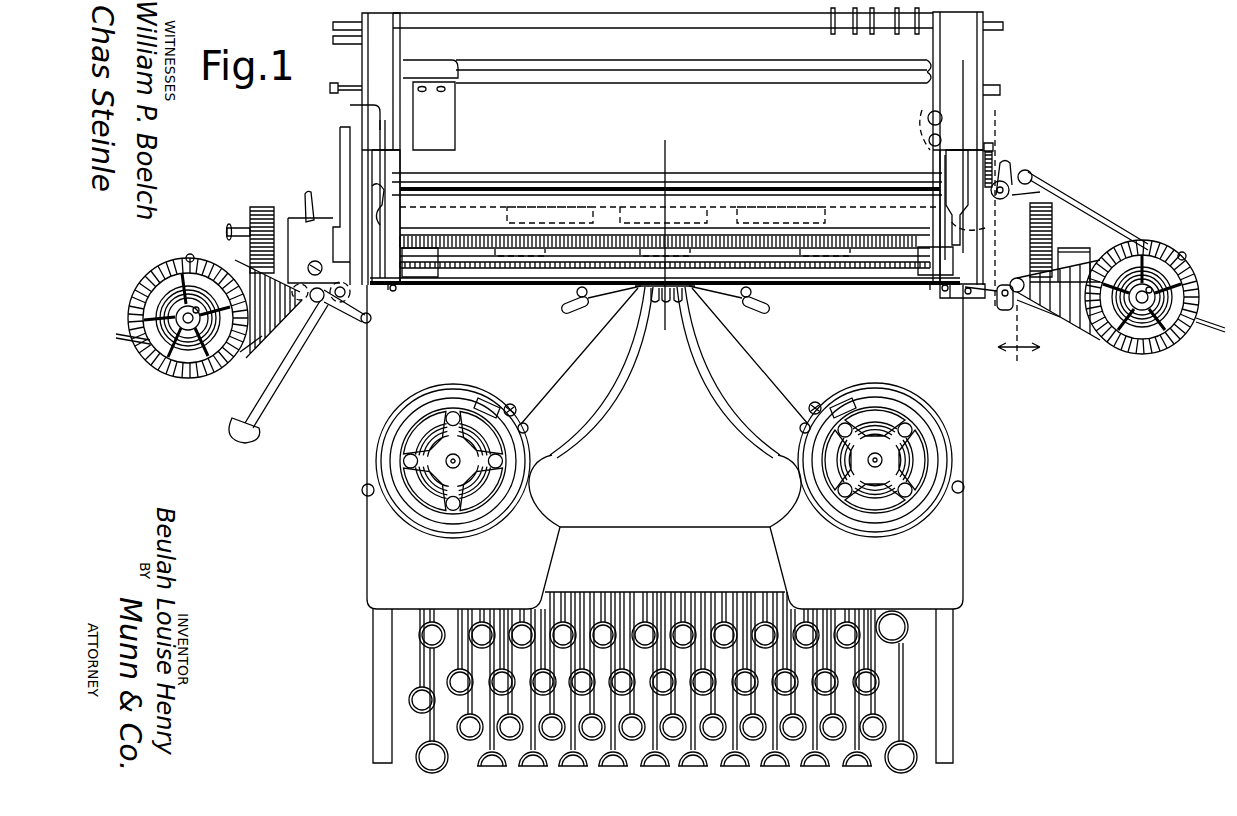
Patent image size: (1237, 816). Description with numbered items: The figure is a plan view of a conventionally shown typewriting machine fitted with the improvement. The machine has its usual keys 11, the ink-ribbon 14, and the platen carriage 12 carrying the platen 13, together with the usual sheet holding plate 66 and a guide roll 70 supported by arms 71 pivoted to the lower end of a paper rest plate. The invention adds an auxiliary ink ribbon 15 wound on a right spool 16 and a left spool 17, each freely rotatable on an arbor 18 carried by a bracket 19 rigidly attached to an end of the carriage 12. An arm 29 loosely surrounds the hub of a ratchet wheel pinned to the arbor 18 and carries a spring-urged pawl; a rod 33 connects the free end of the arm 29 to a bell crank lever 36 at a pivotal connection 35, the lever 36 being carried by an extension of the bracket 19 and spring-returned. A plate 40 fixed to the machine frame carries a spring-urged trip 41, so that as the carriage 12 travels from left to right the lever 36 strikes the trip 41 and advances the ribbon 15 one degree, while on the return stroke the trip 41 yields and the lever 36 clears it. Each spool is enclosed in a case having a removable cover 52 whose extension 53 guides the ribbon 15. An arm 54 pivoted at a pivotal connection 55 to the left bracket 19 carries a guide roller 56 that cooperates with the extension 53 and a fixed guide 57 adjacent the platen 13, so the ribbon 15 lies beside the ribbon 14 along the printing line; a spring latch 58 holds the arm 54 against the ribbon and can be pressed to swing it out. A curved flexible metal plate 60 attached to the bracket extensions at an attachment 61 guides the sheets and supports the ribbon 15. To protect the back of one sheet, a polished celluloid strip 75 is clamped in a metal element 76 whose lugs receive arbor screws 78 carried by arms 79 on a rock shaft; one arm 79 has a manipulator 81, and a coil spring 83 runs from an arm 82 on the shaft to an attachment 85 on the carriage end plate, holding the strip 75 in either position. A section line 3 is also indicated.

The section line 3 is at (1014, 239).
The keys 11 is at (420, 708).
The platen carriage 12 is at (352, 104).
The platen 13 is at (412, 232).
The ink-ribbon 14 is at (590, 358).
The auxiliary ink ribbon 15 is at (950, 288).
The spool 16 is at (1153, 342).
The spool 17 is at (175, 368).
The arbor 18 is at (205, 362).
The bracket 19 is at (250, 280).
The arm 29 is at (185, 262).
The rod 33 is at (275, 232).
The pivotal connection 35 is at (1030, 177).
The bell crank lever 36 is at (307, 200).
The plate 40 is at (425, 178).
The trip 41 is at (927, 150).
The cover 52 is at (140, 352).
The extension 53 is at (1052, 300).
The arm 54 is at (265, 330).
The pivotal connection 55 is at (258, 330).
The guide roller 56 is at (342, 305).
The fixed guide 57 is at (392, 284).
The spring latch 58 is at (328, 325).
The curved flexible metal plate 60 is at (782, 188).
The attachment 61 is at (392, 291).
The sheet holding plate 66 is at (680, 318).
The guide roll 70 is at (718, 180).
The arms 71 is at (382, 172).
The strip 75 is at (676, 256).
The metal element 76 is at (753, 232).
The arbor screws 78 is at (948, 228).
The arms 79 is at (370, 188).
The manipulator 81 is at (950, 150).
The arm 82 is at (1012, 195).
The coil spring 83 is at (992, 160).
The attachment 85 is at (993, 147).